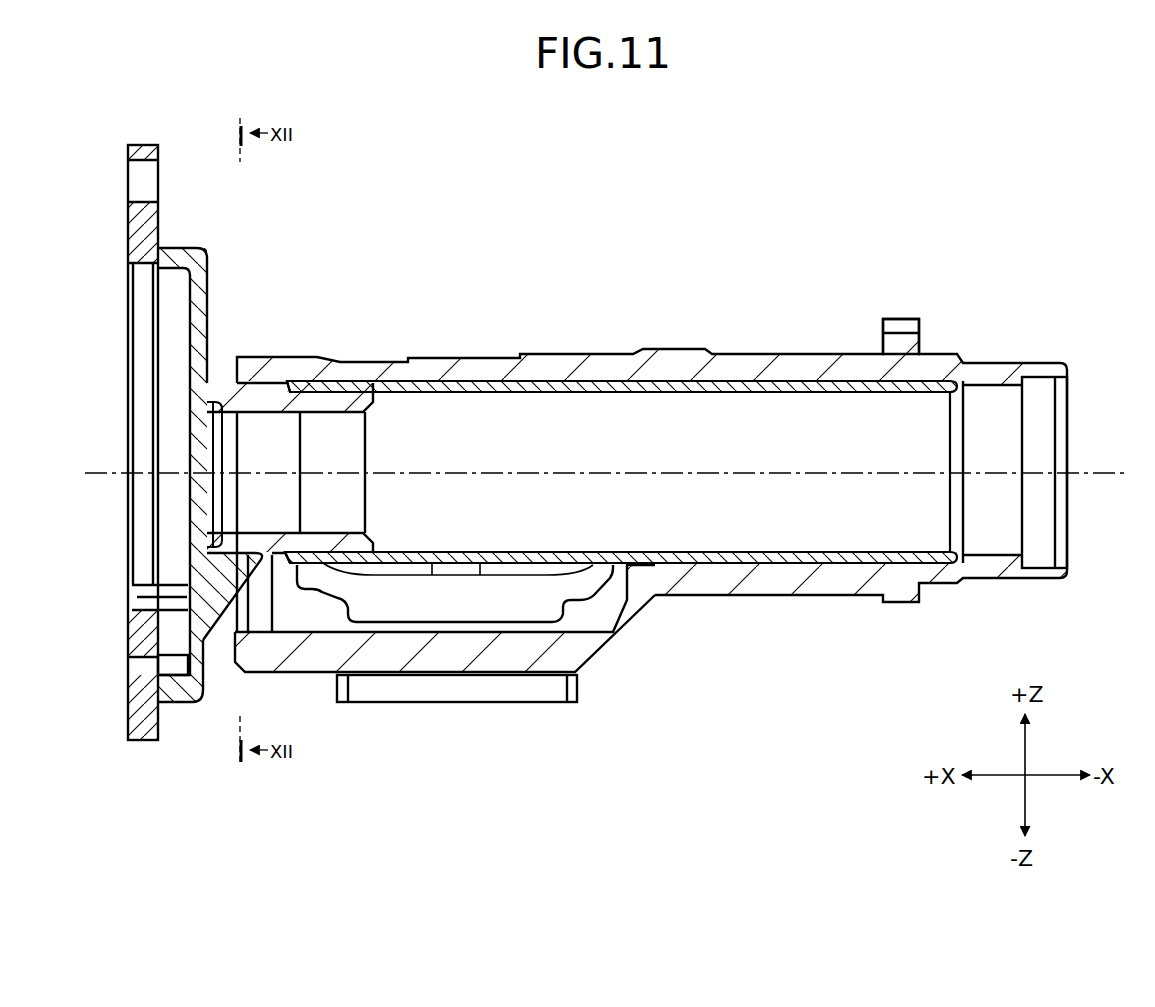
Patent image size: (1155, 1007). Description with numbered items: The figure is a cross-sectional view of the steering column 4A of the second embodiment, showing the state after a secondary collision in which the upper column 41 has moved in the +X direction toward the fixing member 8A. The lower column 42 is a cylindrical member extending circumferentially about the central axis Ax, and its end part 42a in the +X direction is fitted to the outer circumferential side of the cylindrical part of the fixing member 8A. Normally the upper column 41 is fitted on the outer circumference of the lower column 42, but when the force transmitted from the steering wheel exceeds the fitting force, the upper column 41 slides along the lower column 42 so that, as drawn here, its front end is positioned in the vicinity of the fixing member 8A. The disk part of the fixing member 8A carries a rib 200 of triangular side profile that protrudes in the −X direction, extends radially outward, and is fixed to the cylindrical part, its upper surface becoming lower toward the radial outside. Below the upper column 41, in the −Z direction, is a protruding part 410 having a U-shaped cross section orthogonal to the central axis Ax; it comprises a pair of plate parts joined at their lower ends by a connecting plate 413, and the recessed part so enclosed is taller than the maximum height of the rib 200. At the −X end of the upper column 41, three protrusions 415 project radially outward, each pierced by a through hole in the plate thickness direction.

The fixing member 8A is at (206, 249).
The rib 200 is at (213, 597).
The steering column 4A is at (601, 275).
The upper column 41 is at (686, 347).
The protrusion 415 is at (900, 326).
The lower column 42 is at (762, 395).
The end part 42a is at (327, 388).
The connecting plate 413 is at (446, 655).
The protruding part 410 is at (445, 660).
The central axis Ax is at (1100, 470).